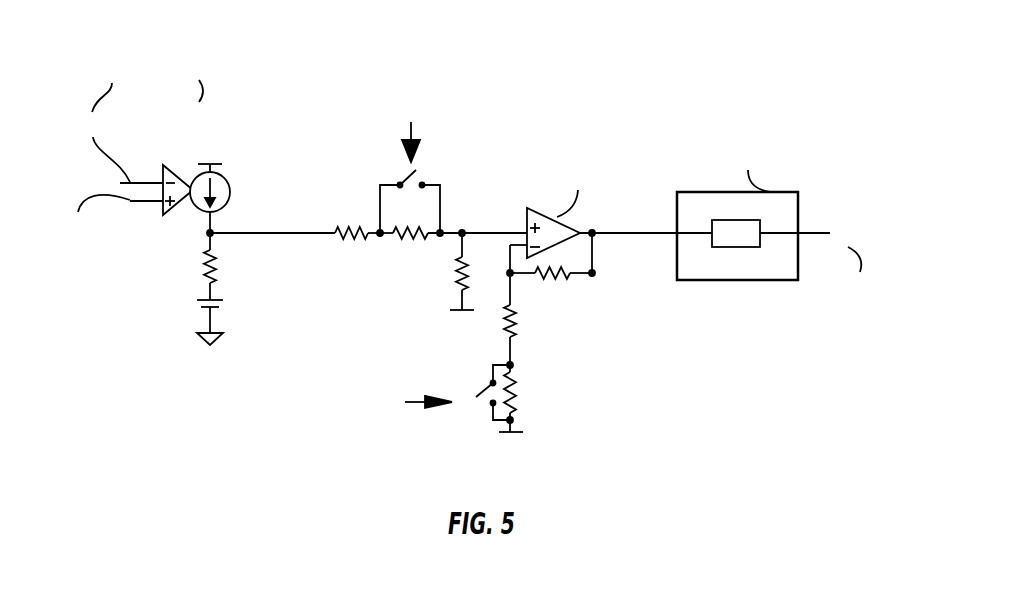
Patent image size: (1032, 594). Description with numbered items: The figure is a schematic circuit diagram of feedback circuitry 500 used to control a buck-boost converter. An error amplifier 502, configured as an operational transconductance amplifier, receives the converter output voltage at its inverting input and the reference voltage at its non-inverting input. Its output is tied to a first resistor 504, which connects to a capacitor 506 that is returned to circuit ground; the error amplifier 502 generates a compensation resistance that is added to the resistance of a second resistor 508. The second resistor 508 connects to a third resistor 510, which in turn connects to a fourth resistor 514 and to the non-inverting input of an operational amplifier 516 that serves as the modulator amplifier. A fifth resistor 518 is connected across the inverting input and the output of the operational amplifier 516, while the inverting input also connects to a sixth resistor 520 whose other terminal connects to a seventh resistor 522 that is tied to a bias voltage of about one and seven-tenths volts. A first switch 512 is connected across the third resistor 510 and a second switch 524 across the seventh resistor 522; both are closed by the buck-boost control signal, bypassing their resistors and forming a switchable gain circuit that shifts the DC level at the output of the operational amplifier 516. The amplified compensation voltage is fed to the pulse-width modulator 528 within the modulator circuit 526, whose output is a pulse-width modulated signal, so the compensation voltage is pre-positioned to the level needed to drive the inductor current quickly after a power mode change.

The feedback circuitry 500 is at (712, 37).
The error amplifier 502 is at (173, 173).
The first resistor 504 is at (217, 265).
The capacitor 506 is at (223, 304).
The second resistor 508 is at (360, 240).
The third resistor 510 is at (416, 242).
The first switch 512 is at (422, 184).
The fourth resistor 514 is at (453, 280).
The operational amplifier 516 is at (580, 148).
The fifth resistor 518 is at (567, 283).
The sixth resistor 520 is at (512, 335).
The seventh resistor 522 is at (513, 378).
The second switch 524 is at (488, 403).
The modulator circuit 526 is at (720, 145).
The PWM modulator 528 is at (760, 224).